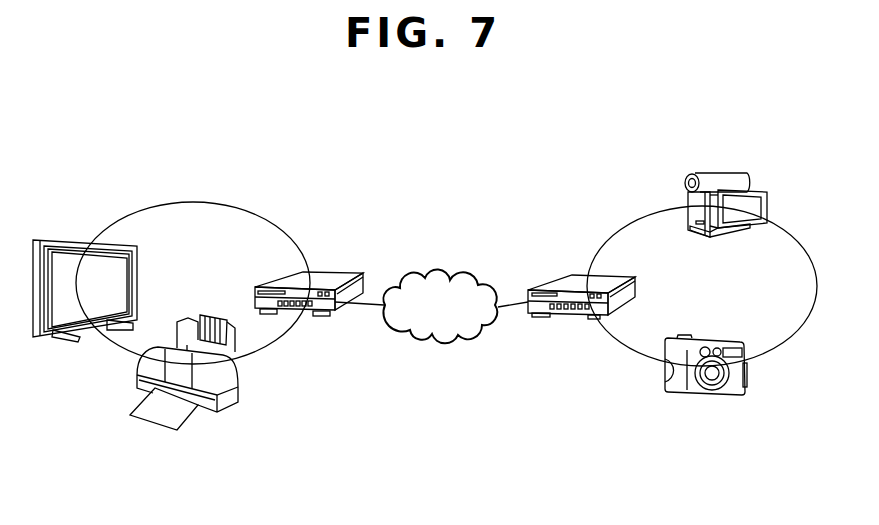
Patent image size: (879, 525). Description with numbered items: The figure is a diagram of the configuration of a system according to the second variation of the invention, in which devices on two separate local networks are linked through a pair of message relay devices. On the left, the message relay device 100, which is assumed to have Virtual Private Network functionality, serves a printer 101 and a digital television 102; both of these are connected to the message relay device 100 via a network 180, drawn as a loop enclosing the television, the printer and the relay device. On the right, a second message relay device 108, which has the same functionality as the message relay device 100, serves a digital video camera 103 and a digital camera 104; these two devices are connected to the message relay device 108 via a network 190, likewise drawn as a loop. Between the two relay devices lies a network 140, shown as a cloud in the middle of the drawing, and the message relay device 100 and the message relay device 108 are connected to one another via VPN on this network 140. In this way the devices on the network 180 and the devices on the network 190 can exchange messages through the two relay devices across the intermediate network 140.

The message relay device 100 is at (340, 271).
The printer 101 is at (228, 414).
The digital television 102 is at (75, 239).
The digital video camera 103 is at (730, 171).
The digital camera 104 is at (697, 396).
The message relay device 108 is at (543, 316).
The network 140 is at (430, 269).
The network 180 is at (203, 201).
The network 190 is at (627, 223).